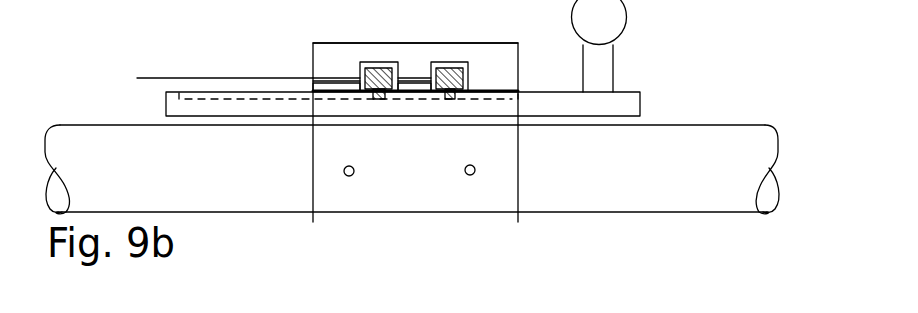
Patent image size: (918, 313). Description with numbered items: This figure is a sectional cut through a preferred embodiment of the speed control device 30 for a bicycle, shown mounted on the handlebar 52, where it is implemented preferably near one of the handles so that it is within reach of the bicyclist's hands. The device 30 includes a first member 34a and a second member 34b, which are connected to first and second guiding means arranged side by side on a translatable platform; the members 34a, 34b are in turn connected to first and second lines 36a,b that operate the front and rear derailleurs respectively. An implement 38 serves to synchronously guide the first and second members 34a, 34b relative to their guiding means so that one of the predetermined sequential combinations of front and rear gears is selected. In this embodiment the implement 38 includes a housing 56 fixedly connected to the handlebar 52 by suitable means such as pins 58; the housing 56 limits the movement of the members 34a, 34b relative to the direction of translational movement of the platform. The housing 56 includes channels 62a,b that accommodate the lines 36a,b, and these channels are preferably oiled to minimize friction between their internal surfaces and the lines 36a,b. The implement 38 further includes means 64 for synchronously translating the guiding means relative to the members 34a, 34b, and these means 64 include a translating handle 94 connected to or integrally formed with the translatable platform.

The speed control device 30 is at (764, 53).
The first member 34a is at (445, 72).
The second member 34b is at (379, 72).
The first and second lines 36a,b is at (158, 78).
The implement 38 is at (292, 70).
The handlebar 52 is at (711, 142).
The housing 56 is at (500, 187).
The pins 58 is at (462, 171).
The channels 62a,b is at (334, 72).
The means for synchronously translating 64 is at (600, 65).
The translating handle 94 is at (608, 18).